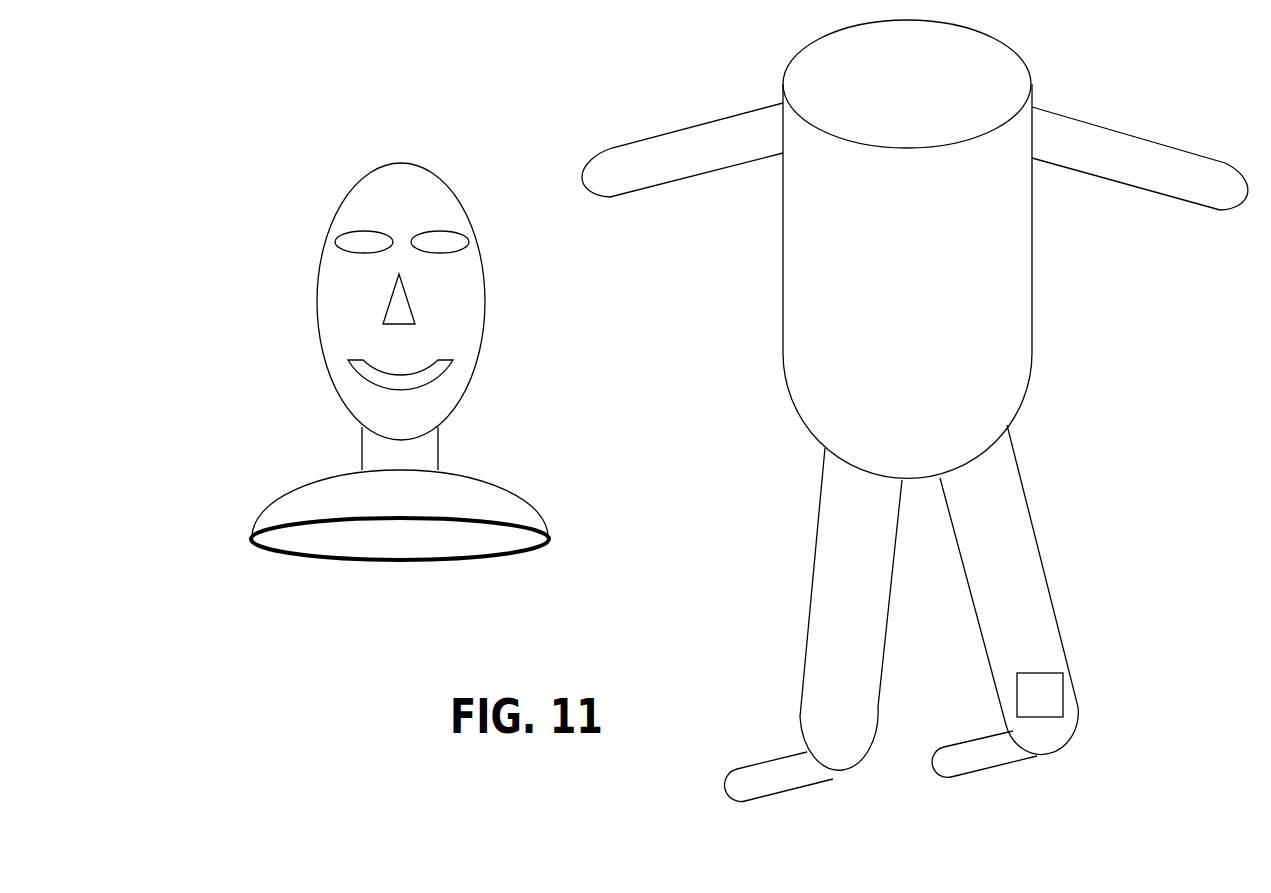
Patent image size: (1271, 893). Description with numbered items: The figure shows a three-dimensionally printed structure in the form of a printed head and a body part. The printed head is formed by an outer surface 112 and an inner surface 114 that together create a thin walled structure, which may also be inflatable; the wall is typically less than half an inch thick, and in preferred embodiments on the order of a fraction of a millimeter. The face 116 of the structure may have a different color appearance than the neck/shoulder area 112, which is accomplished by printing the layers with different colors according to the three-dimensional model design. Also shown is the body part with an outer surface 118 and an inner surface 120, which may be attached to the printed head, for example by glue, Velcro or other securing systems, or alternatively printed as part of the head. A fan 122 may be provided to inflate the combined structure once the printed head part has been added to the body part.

The outer surface 112 is at (287, 517).
The inner surface 114 is at (347, 538).
The face 116 is at (332, 320).
The outer surface 118 is at (825, 342).
The inner surface 120 is at (937, 63).
The fan 122 is at (1030, 700).